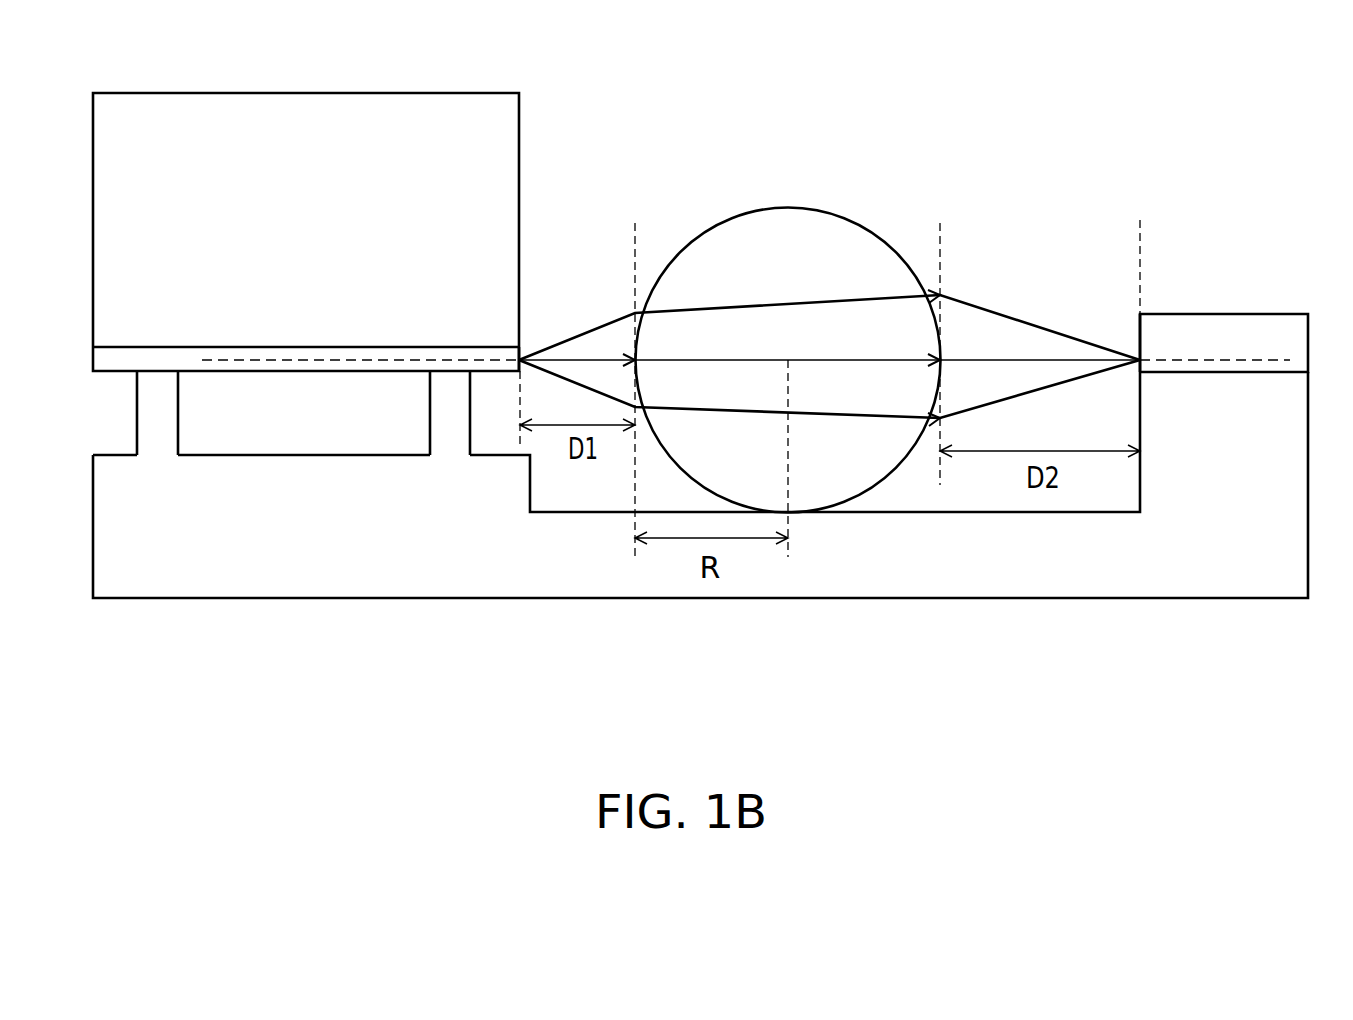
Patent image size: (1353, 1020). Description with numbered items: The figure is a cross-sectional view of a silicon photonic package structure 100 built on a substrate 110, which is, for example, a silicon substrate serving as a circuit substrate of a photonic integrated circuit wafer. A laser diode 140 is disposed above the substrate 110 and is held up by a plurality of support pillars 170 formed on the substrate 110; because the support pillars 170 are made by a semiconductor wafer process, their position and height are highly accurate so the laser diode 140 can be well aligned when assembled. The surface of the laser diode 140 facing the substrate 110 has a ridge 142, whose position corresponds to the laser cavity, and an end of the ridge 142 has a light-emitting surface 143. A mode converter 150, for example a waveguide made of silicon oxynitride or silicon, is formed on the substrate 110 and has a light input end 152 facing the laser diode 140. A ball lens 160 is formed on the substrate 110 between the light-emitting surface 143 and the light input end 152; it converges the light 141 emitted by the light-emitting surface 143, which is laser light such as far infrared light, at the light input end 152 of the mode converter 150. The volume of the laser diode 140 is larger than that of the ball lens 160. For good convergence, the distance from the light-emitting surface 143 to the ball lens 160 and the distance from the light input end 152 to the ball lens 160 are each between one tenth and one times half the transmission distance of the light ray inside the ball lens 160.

The silicon photonic package structure 100 is at (1255, 696).
The substrate 110 is at (900, 560).
The laser diode 140 is at (338, 105).
The light 141 is at (580, 333).
The ridge 142 is at (280, 363).
The light-emitting surface 143 is at (523, 364).
The mode converter 150 is at (1223, 330).
The light input end 152 is at (1138, 328).
The ball lens 160 is at (800, 235).
The support pillars 170 is at (153, 418).